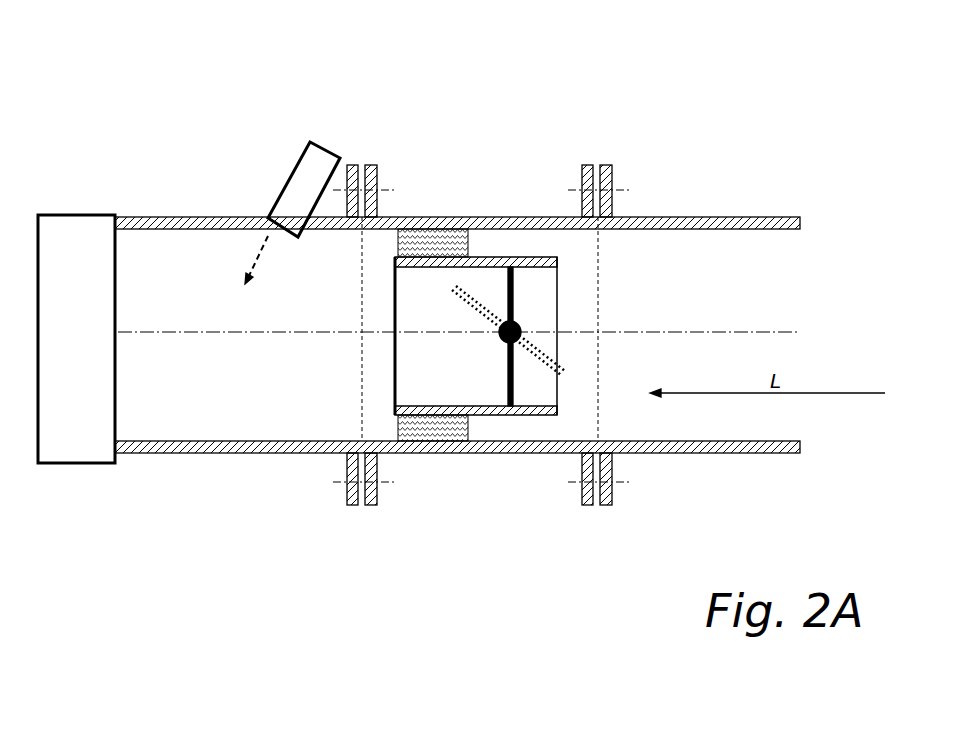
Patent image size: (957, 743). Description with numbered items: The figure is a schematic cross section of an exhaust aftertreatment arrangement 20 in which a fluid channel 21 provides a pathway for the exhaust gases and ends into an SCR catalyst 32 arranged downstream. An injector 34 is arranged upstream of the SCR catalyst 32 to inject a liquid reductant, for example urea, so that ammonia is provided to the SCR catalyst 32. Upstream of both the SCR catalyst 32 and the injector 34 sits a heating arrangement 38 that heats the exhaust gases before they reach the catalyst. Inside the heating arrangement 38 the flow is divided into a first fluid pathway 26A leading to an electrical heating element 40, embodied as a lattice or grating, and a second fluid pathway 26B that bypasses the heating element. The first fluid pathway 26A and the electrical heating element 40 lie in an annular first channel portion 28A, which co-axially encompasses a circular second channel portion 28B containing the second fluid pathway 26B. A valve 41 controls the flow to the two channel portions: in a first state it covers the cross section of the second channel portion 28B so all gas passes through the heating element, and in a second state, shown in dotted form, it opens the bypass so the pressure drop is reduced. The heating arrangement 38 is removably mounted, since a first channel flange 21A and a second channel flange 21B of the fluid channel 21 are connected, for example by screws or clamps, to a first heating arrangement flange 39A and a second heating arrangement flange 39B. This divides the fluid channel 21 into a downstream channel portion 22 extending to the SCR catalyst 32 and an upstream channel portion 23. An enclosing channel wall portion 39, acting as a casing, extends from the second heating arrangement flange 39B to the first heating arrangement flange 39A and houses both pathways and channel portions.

The exhaust aftertreatment arrangement 20 is at (708, 143).
The fluid channel 21 is at (777, 217).
The first channel flange 21A is at (347, 505).
The second channel flange 21B is at (610, 505).
The downstream channel portion 22 is at (190, 453).
The upstream channel portion 23 is at (740, 448).
The first fluid pathway 26A is at (514, 238).
The second fluid pathway 26B is at (480, 375).
The first channel portion 28A is at (560, 243).
The second channel portion 28B is at (545, 287).
The SCR catalyst 32 is at (75, 215).
The injector 34 is at (310, 138).
The heating arrangement 38 is at (515, 578).
The enclosing channel wall portion 39 is at (406, 218).
The first heating arrangement flange 39A is at (373, 163).
The second heating arrangement flange 39B is at (590, 164).
The electrical heating element 40 is at (425, 440).
The valve 41 is at (513, 378).